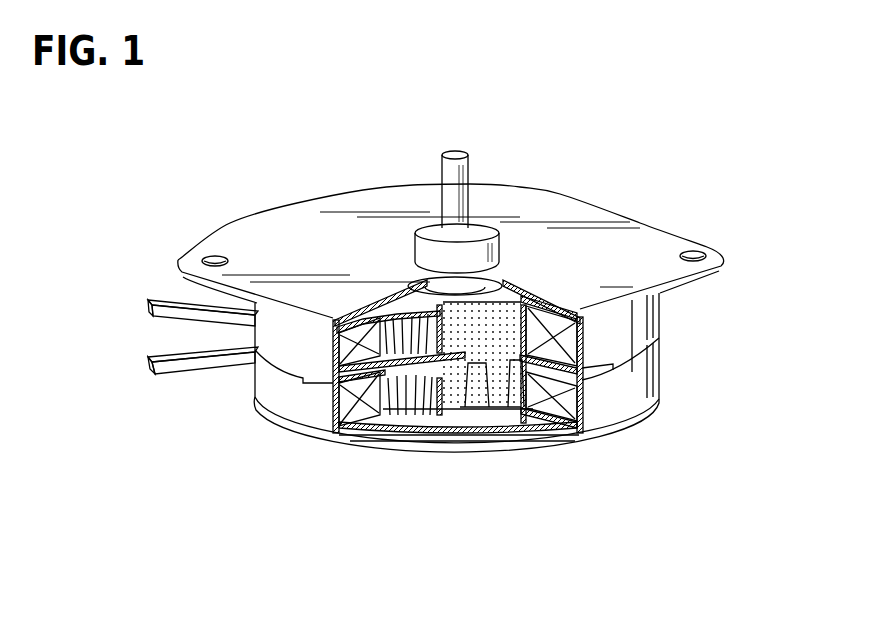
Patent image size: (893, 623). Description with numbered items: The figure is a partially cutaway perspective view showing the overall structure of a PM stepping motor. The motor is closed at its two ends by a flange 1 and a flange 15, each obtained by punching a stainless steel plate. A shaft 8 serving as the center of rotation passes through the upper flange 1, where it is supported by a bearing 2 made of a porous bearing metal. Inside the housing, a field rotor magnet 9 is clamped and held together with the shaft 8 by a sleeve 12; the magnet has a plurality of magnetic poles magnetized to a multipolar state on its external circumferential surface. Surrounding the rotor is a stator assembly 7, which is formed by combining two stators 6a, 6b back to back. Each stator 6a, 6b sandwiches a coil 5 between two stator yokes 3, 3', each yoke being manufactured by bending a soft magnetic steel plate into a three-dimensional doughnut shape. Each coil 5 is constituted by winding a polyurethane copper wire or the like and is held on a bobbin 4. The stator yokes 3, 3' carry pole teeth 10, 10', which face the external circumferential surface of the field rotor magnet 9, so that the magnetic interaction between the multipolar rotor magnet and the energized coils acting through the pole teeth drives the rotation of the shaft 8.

The flange 1 is at (596, 228).
The bearing 2 is at (482, 231).
The stator yoke 3 is at (460, 316).
The stator yoke 3' is at (420, 332).
The bobbin 4 is at (378, 428).
The coil 5 is at (343, 317).
The stator 6a is at (643, 320).
The stator 6b is at (643, 373).
The stator assembly 7 is at (725, 303).
The shaft 8 is at (455, 153).
The field rotor magnet 9 is at (467, 327).
The pole teeth 10 is at (492, 436).
The pole teeth 10' is at (424, 414).
The sleeve 12 is at (430, 321).
The flange 15 is at (513, 437).